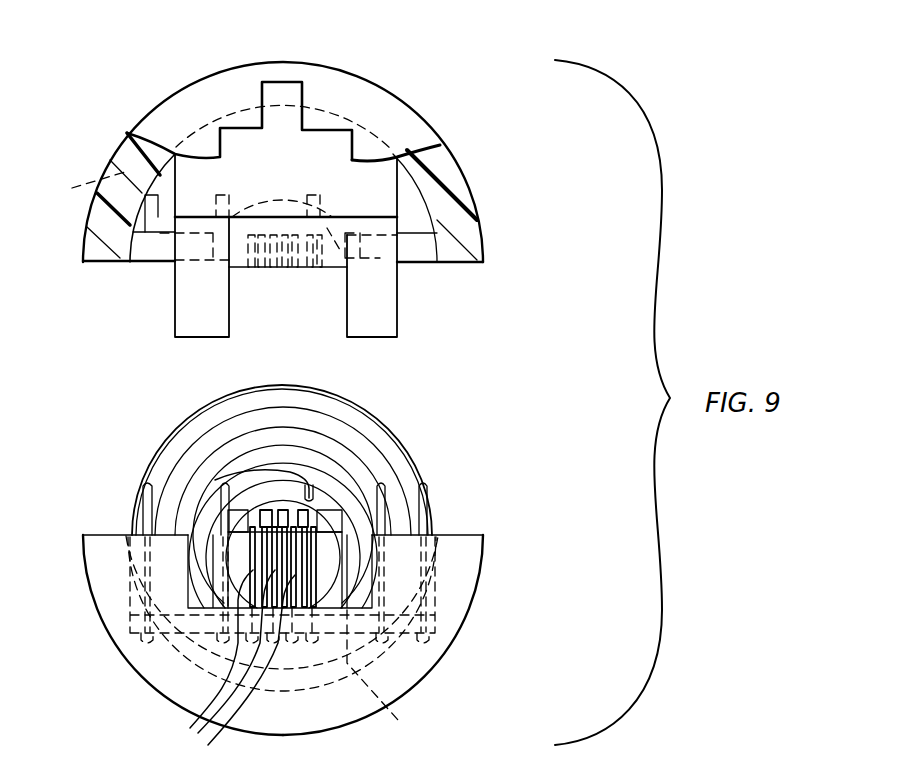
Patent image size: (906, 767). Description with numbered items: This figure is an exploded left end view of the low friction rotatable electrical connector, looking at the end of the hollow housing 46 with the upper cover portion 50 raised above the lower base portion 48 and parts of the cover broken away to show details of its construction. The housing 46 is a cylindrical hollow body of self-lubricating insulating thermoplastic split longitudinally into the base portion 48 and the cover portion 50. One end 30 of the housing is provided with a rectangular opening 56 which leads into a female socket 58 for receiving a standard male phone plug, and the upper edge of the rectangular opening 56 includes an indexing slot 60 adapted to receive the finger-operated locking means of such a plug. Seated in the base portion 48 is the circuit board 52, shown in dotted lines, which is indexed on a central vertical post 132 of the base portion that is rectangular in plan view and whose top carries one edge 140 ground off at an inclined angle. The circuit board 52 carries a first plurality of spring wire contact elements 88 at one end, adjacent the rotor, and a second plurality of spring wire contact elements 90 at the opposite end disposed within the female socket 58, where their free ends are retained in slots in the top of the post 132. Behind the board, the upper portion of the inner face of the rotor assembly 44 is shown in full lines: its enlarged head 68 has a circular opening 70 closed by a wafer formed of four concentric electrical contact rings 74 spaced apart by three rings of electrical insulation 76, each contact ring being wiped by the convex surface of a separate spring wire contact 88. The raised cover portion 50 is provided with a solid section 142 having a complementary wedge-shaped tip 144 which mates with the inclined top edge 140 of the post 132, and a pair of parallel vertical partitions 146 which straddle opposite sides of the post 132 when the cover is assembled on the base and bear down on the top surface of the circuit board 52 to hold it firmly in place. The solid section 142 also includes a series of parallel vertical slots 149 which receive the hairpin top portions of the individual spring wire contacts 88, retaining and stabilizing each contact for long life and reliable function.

The end of housing 30 is at (140, 653).
The rotor assembly 44 is at (436, 505).
The hollow housing 46 is at (196, 80).
The lower base portion 48 is at (420, 680).
The upper cover portion 50 is at (410, 104).
The circuit board 52 is at (389, 679).
The rectangular opening 56 is at (195, 587).
The female socket 58 is at (358, 599).
The indexing slot 60 is at (272, 90).
The enlarged head 68 is at (400, 432).
The circular opening 70 is at (204, 408).
The concentric electrical contact rings 74 is at (407, 475).
The rings of electrical insulation 76 is at (358, 442).
The first plurality of spring wire contact elements 88 is at (223, 488).
The second plurality of spring wire contact elements 90 is at (241, 637).
The central vertical post 132 is at (333, 515).
The inclined top edge of post 140 is at (237, 518).
The solid section 142 is at (314, 173).
The wedge-shaped tip 144 is at (322, 268).
The parallel vertical partitions 146 is at (187, 303).
The parallel vertical slots 149 is at (150, 213).